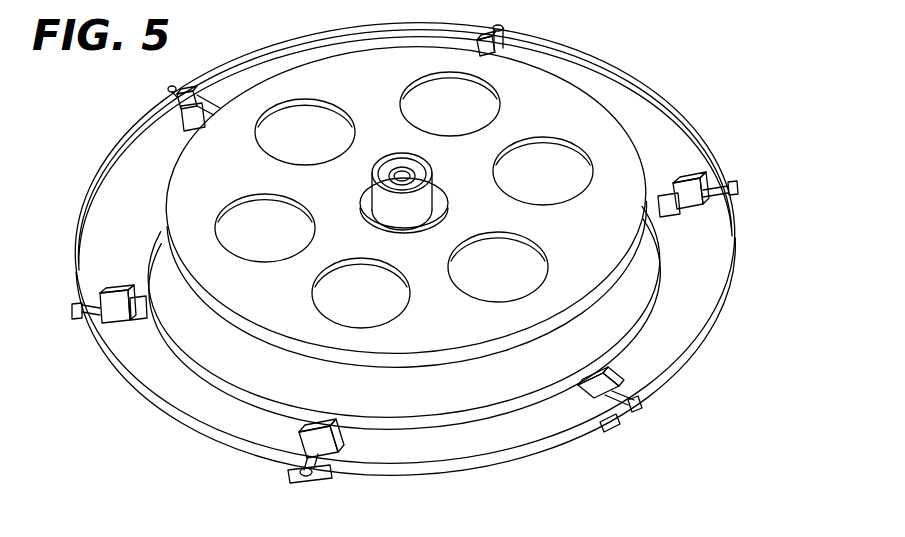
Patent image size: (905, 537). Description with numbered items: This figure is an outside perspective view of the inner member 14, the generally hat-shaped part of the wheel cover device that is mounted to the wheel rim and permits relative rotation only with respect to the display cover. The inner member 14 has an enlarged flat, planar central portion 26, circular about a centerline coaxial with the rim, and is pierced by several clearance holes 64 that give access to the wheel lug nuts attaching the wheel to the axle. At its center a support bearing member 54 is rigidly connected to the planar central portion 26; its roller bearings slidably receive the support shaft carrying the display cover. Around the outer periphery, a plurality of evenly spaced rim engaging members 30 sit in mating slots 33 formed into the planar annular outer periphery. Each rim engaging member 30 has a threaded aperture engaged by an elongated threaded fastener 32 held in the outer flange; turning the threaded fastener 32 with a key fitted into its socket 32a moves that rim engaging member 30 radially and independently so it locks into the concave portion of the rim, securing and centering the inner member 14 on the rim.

The inner member 14 is at (560, 41).
The planar central portion 26 is at (422, 238).
The rim engaging member 30 is at (742, 185).
The threaded fastener 32 is at (764, 189).
The socket 32a is at (738, 188).
The mating slot 33 is at (672, 216).
The support bearing member 54 is at (425, 197).
The clearance hole 64 is at (536, 146).